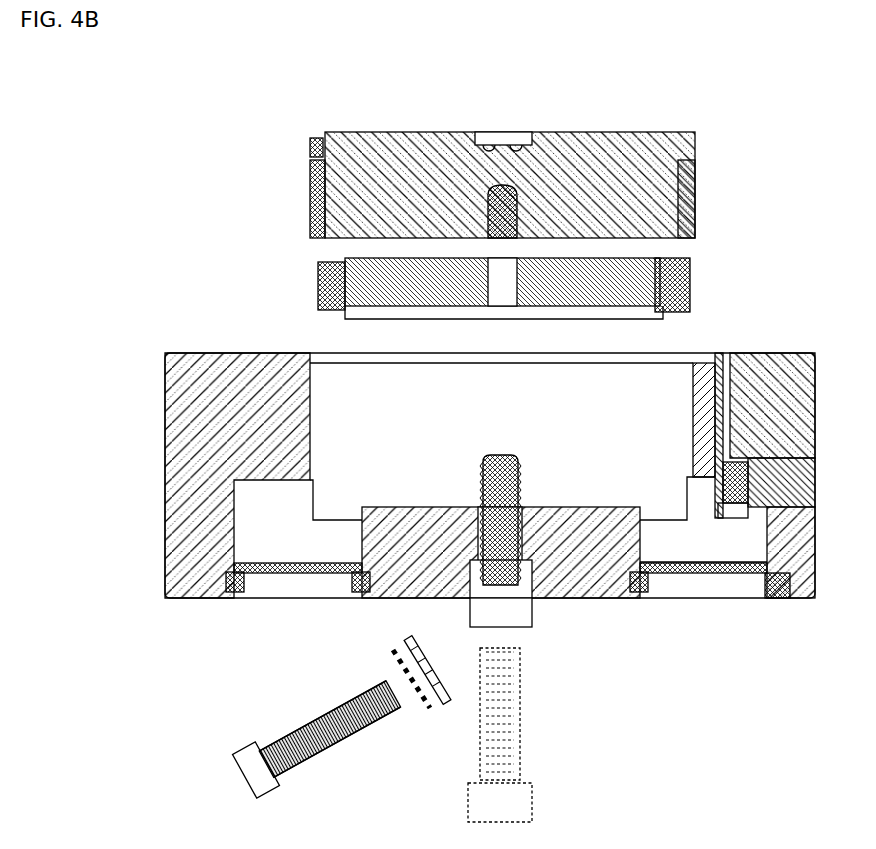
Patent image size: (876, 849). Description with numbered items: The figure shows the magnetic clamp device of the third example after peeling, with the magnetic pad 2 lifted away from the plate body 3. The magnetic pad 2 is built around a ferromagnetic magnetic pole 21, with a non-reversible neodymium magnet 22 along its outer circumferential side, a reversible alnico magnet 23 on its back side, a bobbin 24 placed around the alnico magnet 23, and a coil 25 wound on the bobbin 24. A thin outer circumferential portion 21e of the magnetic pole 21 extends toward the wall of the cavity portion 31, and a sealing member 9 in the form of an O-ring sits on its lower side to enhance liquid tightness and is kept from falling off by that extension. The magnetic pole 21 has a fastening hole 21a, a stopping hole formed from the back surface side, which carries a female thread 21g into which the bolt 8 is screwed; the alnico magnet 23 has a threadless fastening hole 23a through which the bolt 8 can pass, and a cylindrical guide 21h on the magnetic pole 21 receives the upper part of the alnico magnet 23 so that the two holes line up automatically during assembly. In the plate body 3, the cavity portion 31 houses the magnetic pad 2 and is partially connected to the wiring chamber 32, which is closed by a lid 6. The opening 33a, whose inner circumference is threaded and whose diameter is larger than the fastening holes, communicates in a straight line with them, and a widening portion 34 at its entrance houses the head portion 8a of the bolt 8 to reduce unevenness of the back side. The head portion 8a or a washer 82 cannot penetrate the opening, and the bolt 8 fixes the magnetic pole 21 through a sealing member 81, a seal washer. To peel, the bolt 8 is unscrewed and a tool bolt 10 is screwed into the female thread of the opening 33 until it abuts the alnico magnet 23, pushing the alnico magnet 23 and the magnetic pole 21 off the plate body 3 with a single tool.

The magnetic pad 2 is at (748, 329).
The plate body 3 is at (213, 368).
The lid 6 is at (296, 572).
The bolt 8 is at (290, 738).
The head portion 8a is at (258, 798).
The sealing member 9 is at (318, 152).
The tool bolt 10 is at (510, 453).
The magnetic pole 21 is at (663, 157).
The fastening hole 21a is at (452, 180).
The outer circumferential portion 21e is at (318, 135).
The female thread 21g is at (517, 200).
The cylindrical guide 21h is at (322, 240).
The neodymium magnet 22 is at (316, 200).
The alnico magnet 23 is at (650, 255).
The fastening hole 23a is at (507, 290).
The bobbin 24 is at (680, 262).
The coil 25 is at (690, 285).
The cavity portion 31 is at (502, 396).
The wiring chamber 32 is at (290, 528).
The opening 33 is at (548, 538).
The opening 33a is at (482, 540).
The widening portion 34 is at (482, 555).
The sealing member 81 is at (447, 712).
The washer 82 is at (427, 703).